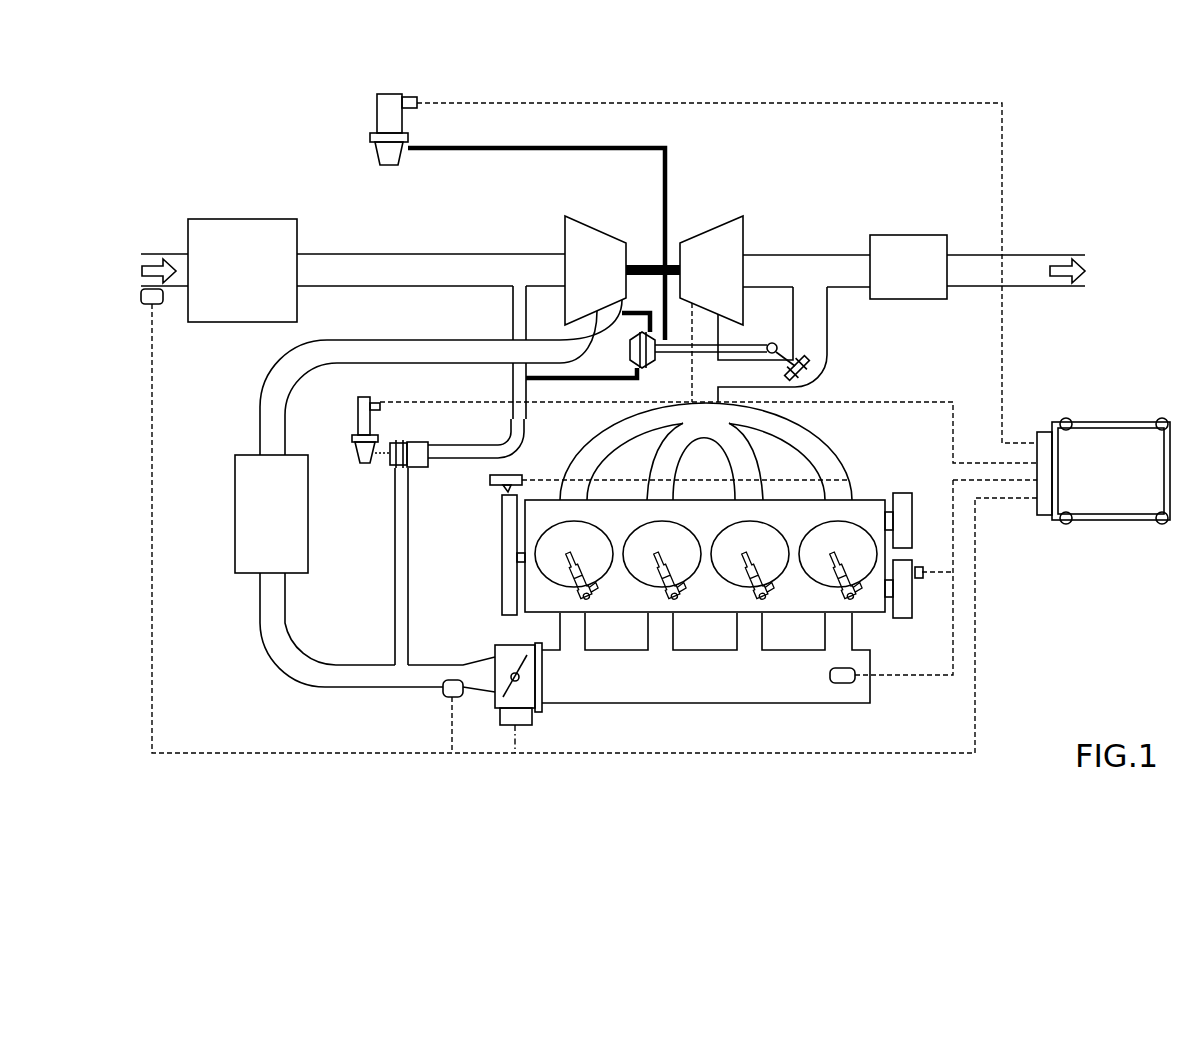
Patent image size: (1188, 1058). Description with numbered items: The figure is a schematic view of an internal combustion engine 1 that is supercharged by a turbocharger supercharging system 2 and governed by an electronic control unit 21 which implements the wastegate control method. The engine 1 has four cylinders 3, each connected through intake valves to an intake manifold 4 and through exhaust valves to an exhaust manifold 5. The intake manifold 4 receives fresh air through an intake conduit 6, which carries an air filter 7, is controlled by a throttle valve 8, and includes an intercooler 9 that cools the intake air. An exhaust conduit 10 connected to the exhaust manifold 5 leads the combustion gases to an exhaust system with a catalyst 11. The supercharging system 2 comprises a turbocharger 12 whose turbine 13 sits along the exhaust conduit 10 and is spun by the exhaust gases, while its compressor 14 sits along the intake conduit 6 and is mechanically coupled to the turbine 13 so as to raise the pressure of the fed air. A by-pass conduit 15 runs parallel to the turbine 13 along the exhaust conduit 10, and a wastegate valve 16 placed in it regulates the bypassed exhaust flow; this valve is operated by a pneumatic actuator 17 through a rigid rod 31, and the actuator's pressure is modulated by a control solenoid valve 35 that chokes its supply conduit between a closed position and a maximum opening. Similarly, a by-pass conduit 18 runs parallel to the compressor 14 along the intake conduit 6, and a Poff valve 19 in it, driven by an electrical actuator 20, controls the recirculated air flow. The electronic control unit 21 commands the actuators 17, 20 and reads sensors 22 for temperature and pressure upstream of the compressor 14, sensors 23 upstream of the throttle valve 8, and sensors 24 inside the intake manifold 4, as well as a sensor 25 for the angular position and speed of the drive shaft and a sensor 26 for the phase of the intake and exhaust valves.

The internal combustion engine 1 is at (256, 123).
The turbocharger supercharging system 2 is at (498, 224).
The cylinders 3 is at (706, 561).
The intake manifold 4 is at (707, 598).
The exhaust manifold 5 is at (706, 451).
The intake conduit 6 is at (270, 420).
The air filter 7 is at (242, 270).
The throttle valve 8 is at (540, 707).
The intercooler 9 is at (271, 514).
The exhaust conduit 10 is at (849, 268).
The catalyst 11 is at (908, 267).
The turbocharger 12 is at (707, 184).
The turbine 13 is at (691, 258).
The compressor 14 is at (579, 240).
The by-pass conduit 15 is at (822, 333).
The wastegate valve 16 is at (804, 372).
The pneumatic actuator 17 is at (650, 362).
The by-pass conduit 18 is at (400, 553).
The Poff valve 19 is at (410, 470).
The electrical actuator 20 is at (368, 417).
The electronic control unit 21 is at (1103, 471).
The sensors 22 is at (160, 305).
The sensors 23 is at (451, 698).
The sensors 24 is at (840, 684).
The sensor 25 is at (518, 476).
The sensor 26 is at (917, 580).
The rigid rod 31 is at (752, 350).
The control solenoid valve 35 is at (400, 118).